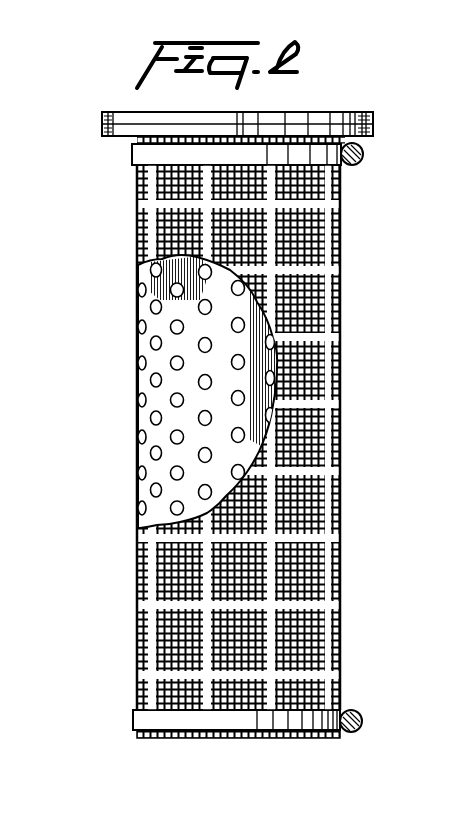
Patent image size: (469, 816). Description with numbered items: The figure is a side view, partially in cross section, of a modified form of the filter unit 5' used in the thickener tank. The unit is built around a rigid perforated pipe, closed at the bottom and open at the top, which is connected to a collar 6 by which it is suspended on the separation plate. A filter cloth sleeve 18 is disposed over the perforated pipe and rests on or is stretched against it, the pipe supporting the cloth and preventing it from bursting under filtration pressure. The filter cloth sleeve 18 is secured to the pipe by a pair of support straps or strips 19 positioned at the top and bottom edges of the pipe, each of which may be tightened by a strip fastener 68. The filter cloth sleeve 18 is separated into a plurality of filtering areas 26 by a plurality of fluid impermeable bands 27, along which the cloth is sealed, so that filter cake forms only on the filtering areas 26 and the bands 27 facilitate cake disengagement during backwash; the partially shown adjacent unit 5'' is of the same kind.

The collar 6 is at (368, 115).
The strip fastener 68 is at (362, 150).
The strip 19 is at (147, 157).
The fluid impermeable band 27 is at (326, 338).
The filtering area 26 is at (340, 478).
The filter cloth sleeve 18 is at (142, 570).
The modified form of the filter unit 5' is at (156, 391).
The filter element 5'' is at (454, 610).